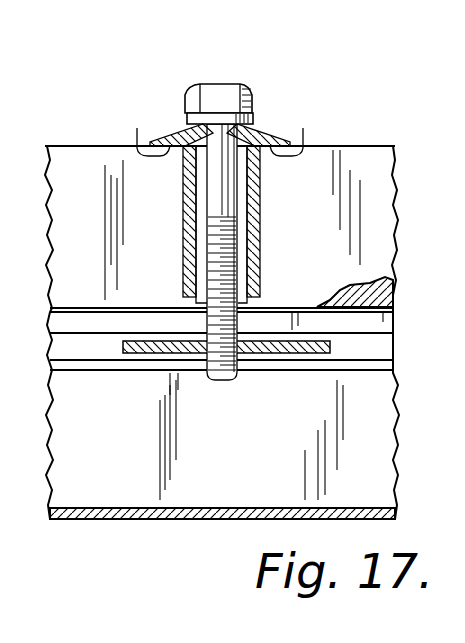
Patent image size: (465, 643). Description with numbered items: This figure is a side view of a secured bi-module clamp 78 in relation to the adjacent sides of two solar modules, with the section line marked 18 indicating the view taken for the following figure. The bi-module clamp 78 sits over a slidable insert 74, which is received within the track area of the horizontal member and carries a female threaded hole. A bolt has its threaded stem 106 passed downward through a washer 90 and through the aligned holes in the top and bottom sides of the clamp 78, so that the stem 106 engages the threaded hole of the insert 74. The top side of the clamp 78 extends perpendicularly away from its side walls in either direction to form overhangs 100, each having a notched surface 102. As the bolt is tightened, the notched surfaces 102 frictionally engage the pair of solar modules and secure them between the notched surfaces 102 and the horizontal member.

The section line for FIG. 18 is at (223, 595).
The slidable insert 74 is at (330, 347).
The bi-module clamp 78 is at (262, 238).
The washer 90 is at (255, 108).
The overhang 100 is at (178, 131).
The notched surface 102 is at (137, 130).
The threaded stem 106 is at (240, 270).